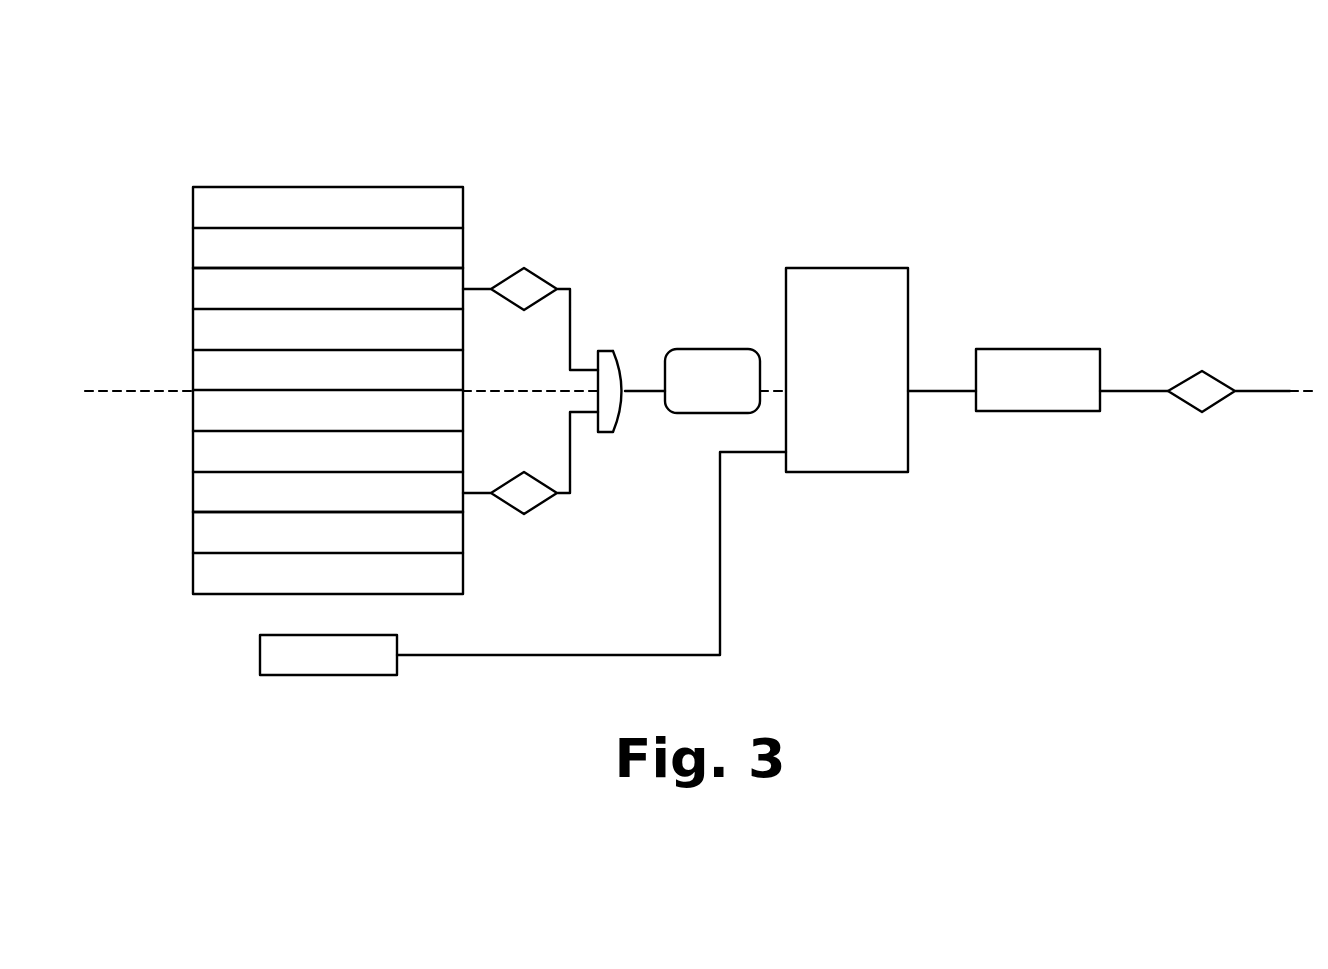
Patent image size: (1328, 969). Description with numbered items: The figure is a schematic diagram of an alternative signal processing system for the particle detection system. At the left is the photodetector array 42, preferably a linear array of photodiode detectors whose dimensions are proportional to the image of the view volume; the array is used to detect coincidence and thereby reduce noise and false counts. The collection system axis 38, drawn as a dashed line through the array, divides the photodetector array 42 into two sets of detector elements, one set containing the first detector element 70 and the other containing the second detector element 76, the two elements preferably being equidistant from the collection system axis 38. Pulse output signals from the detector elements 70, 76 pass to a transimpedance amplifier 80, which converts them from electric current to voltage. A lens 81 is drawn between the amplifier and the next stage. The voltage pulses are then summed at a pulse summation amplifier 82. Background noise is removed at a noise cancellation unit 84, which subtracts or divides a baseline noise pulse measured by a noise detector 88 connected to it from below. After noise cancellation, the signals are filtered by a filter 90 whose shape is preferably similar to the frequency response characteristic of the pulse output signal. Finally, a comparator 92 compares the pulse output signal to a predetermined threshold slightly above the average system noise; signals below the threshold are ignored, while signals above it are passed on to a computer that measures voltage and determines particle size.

The collection system axis 38 is at (150, 392).
The photodetector array 42 is at (313, 187).
The first detector element 70 is at (328, 492).
The second detector element 76 is at (328, 288).
The transimpedance amplifier 80 is at (517, 472).
The collimating lens 81 is at (612, 432).
The pulse summation amplifier 82 is at (705, 349).
The noise cancellation unit 84 is at (867, 268).
The noise detector 88 is at (327, 675).
The filter 90 is at (1060, 349).
The comparator 92 is at (1207, 371).